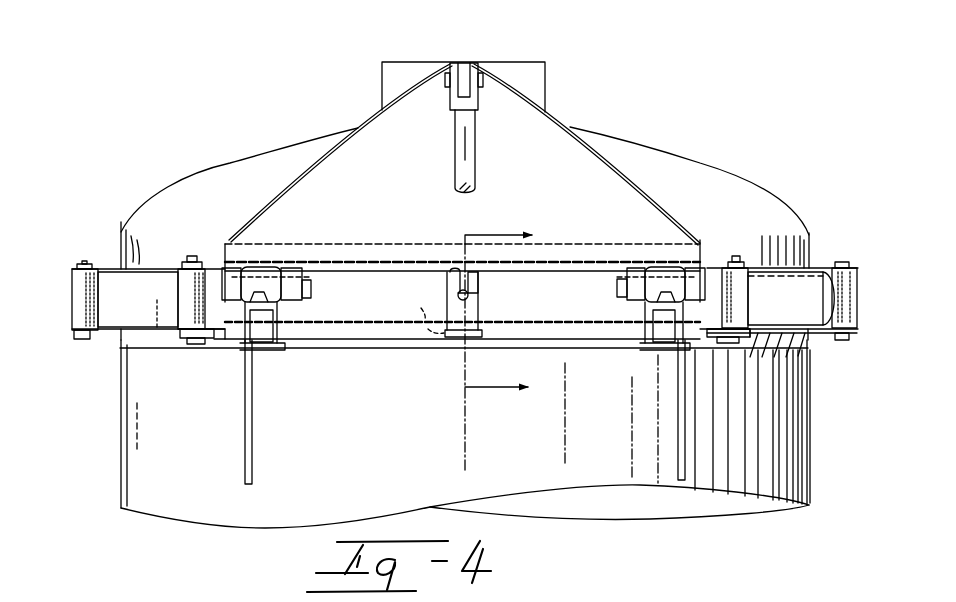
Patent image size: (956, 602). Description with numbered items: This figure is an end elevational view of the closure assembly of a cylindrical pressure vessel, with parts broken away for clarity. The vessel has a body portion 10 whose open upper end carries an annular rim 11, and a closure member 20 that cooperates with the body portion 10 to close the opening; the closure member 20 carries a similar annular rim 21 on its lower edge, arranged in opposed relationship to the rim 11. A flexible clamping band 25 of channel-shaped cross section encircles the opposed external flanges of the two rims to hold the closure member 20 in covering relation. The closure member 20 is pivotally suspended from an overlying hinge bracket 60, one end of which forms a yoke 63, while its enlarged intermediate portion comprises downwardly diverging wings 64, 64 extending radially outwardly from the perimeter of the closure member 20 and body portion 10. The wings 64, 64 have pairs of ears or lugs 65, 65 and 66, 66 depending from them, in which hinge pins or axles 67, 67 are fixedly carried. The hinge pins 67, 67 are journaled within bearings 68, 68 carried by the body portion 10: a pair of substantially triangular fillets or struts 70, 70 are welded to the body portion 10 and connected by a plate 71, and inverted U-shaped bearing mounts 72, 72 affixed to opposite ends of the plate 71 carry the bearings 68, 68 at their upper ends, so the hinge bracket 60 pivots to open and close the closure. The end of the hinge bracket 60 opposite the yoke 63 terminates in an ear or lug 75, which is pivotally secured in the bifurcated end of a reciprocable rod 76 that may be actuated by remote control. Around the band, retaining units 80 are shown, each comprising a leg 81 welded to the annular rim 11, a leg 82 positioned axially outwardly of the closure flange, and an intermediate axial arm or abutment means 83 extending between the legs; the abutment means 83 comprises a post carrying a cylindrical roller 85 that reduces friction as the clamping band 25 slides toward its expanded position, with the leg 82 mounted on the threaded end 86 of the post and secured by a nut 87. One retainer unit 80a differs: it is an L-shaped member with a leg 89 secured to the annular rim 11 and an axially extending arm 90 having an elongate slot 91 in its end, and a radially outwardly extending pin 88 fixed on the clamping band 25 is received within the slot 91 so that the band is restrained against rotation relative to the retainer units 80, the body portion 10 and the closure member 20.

The body portion 10 is at (120, 448).
The annular rim 11 is at (145, 345).
The closure member 20 is at (233, 166).
The annular rim 21 is at (150, 267).
The flexible clamping band 25 is at (158, 312).
The hinge bracket 60 is at (540, 166).
The yoke 63 is at (524, 62).
The wings 64 is at (377, 114).
The ears or lugs 65 is at (287, 267).
The ears or lugs 66 is at (692, 267).
The hinge pins or axles 67 is at (306, 300).
The bearings 68 is at (253, 300).
The fillets or struts 70 is at (253, 423).
The plate 71 is at (390, 342).
The bearing mounts 72 is at (283, 345).
The ear or lug 75 is at (464, 62).
The rod 76 is at (458, 145).
The retaining units 80 is at (95, 342).
The retainer unit 80a is at (484, 283).
The leg 81 is at (186, 346).
The leg 82 is at (72, 266).
The axial arm or abutment means 83 is at (185, 295).
The cylindrical roller 85 is at (750, 293).
The threaded end 86 is at (194, 262).
The nut 87 is at (190, 256).
The pin 88 is at (479, 289).
The leg 89 is at (419, 318).
The axially extending arm 90 is at (479, 313).
The elongate slot 91 is at (452, 278).